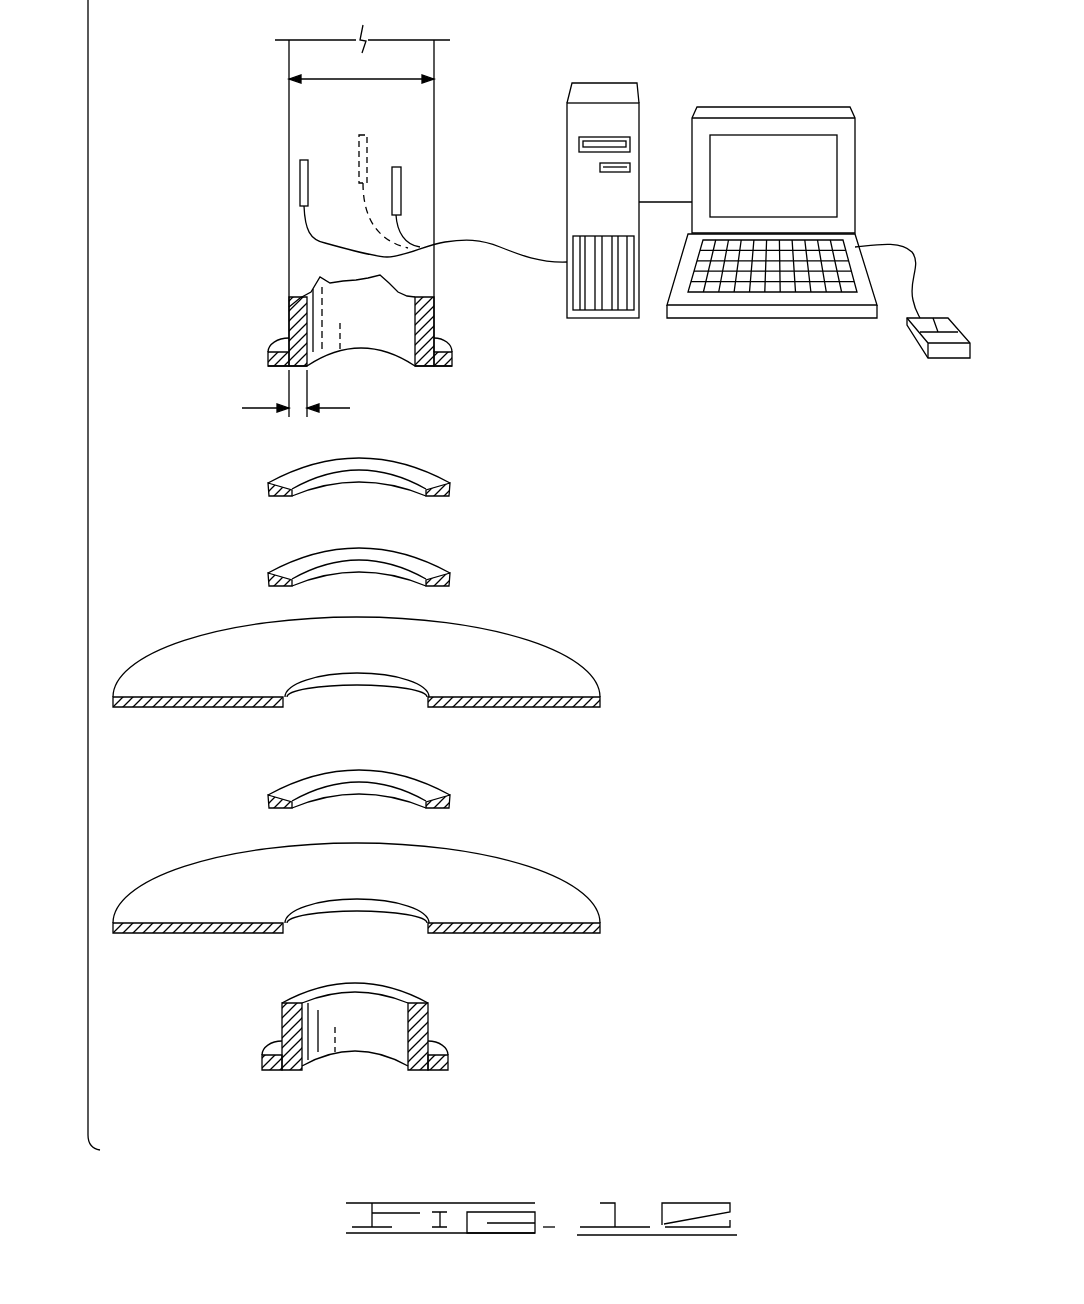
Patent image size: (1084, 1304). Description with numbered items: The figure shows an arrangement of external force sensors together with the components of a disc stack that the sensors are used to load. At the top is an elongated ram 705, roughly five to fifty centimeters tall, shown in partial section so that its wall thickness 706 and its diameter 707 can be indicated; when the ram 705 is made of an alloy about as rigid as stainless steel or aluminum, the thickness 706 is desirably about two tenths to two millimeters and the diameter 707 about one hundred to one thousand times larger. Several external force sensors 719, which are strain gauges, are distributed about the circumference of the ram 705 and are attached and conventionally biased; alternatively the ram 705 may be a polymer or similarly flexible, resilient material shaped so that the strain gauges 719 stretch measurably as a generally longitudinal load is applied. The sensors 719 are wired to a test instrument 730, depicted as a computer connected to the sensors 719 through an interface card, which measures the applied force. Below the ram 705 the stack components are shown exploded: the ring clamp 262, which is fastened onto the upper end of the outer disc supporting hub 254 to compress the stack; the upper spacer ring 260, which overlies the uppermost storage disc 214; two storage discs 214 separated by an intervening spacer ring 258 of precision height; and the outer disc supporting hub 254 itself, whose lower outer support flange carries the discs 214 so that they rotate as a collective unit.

The elongated ram 705 is at (287, 258).
The thickness 706 is at (276, 395).
The diameter 707 is at (333, 79).
The external force sensors 719 is at (299, 185).
The test instrument 730 is at (788, 105).
The ring clamp 262 is at (437, 477).
The upper spacer ring 260 is at (287, 562).
The spacer ring 258 is at (287, 787).
The storage discs 214 is at (528, 663).
The outer disc supporting hub 254 is at (378, 1040).